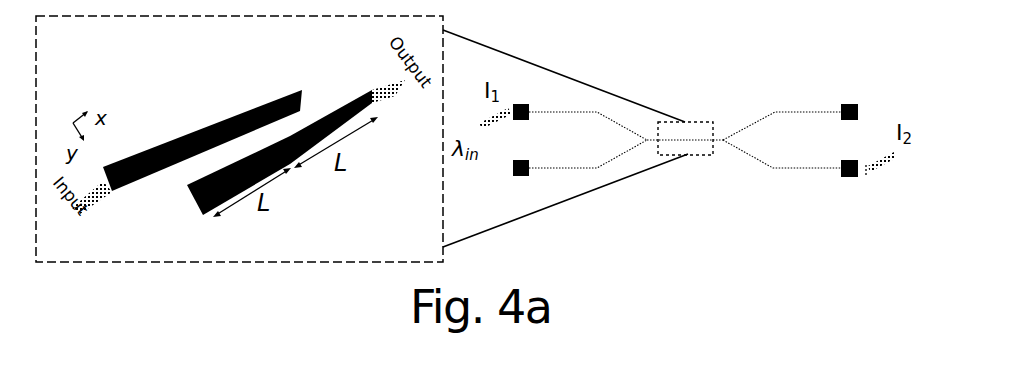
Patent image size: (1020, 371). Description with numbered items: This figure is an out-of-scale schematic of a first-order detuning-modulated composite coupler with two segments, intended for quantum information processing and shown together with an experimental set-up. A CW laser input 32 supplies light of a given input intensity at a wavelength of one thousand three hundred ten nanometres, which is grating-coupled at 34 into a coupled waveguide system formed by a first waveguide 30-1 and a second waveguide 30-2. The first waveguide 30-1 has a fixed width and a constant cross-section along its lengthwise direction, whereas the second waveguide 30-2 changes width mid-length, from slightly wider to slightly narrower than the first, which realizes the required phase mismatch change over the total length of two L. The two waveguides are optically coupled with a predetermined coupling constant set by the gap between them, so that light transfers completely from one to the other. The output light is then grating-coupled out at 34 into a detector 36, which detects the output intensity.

The first waveguide 30-1 is at (187, 129).
The second waveguide 30-2 is at (296, 134).
The laser input 32 is at (541, 146).
The grating coupling 34 is at (697, 146).
The detector 36 is at (868, 192).